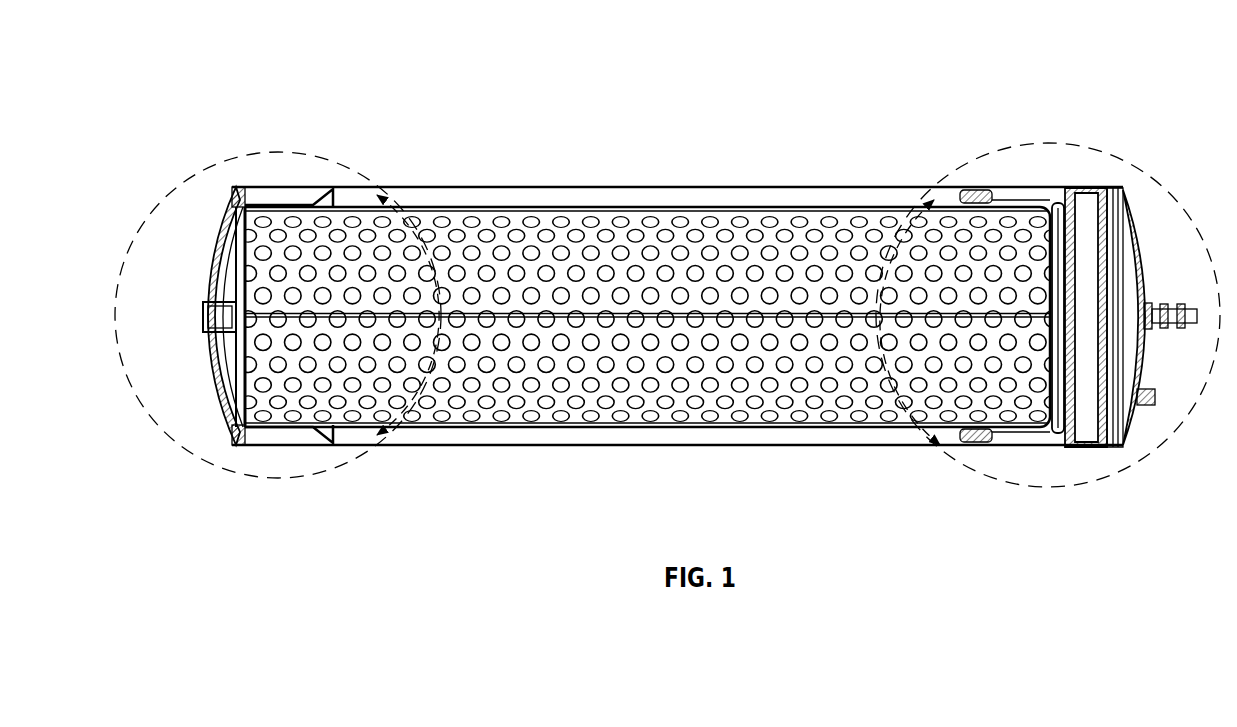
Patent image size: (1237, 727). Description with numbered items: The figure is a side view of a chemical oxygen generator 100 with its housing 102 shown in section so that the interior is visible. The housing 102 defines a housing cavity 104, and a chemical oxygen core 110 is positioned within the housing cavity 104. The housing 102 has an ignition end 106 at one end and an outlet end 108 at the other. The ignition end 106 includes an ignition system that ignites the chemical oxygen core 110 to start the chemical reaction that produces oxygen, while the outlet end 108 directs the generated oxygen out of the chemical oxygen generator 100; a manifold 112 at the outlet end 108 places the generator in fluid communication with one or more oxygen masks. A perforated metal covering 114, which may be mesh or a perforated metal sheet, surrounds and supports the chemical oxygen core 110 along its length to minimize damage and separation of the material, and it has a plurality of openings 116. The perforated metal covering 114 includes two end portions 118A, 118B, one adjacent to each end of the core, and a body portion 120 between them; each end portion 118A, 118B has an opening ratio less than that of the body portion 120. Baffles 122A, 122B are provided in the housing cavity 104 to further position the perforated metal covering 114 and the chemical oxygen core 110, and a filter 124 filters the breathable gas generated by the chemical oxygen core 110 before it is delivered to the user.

The chemical oxygen generator 100 is at (440, 60).
The housing 102 is at (500, 187).
The housing cavity 104 is at (692, 200).
The ignition end 106 is at (233, 192).
The outlet end 108 is at (1135, 208).
The chemical oxygen core 110 is at (592, 214).
The manifold 112 is at (1190, 324).
The perforated metal covering 114 is at (797, 216).
The openings 116 is at (533, 222).
The end portion 118A is at (338, 122).
The end portion 118B is at (1000, 130).
The body portion 120 is at (670, 115).
The baffle 122A is at (326, 437).
The baffle 122B is at (983, 450).
The filter 124 is at (1090, 450).